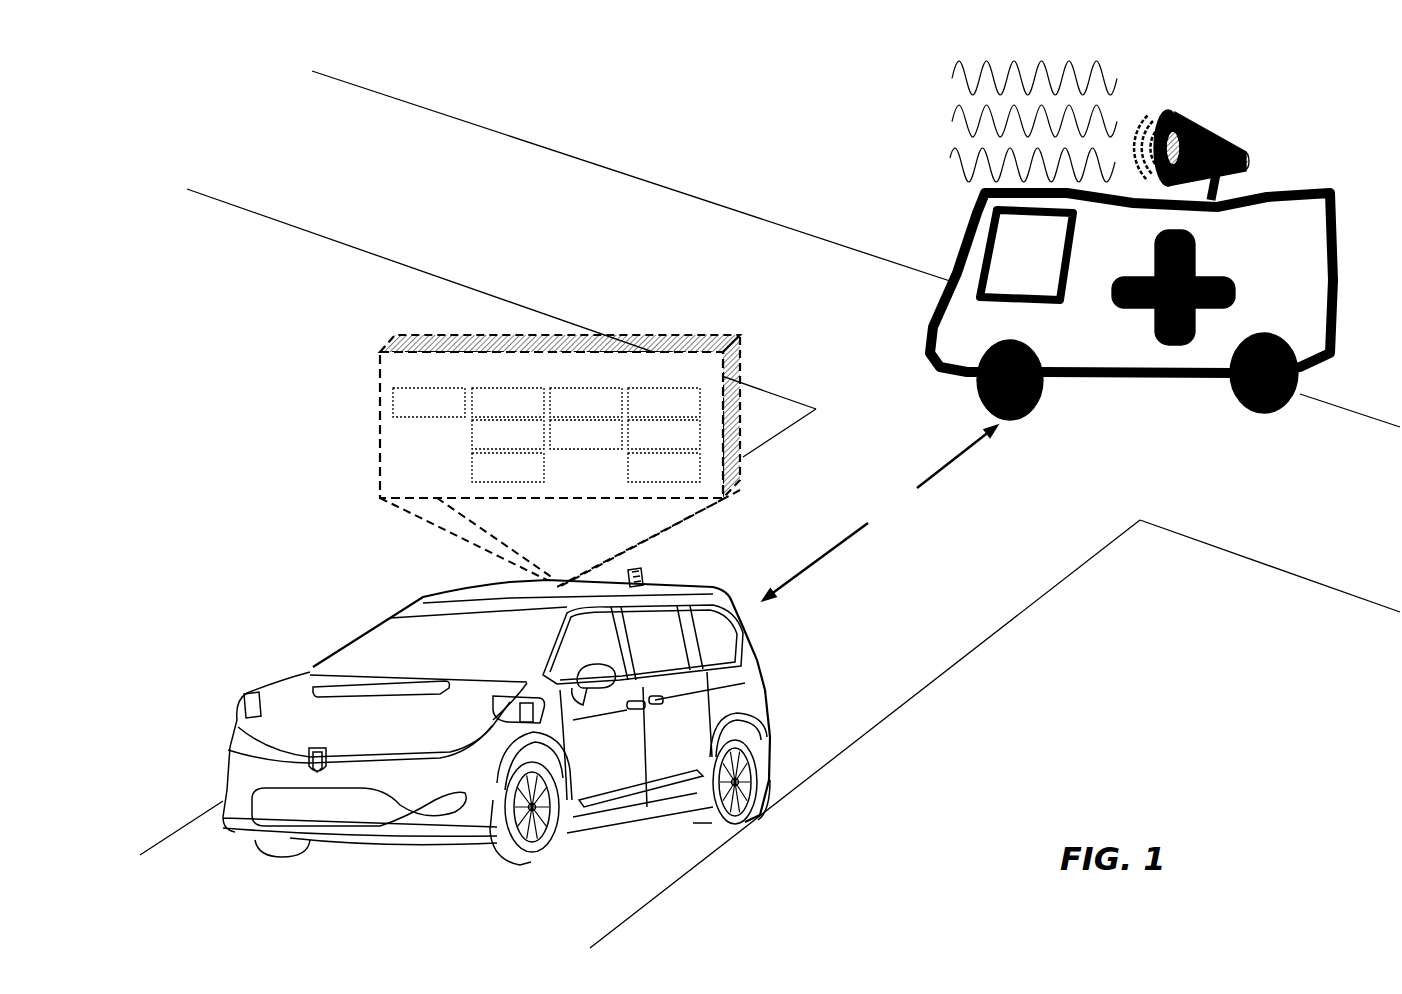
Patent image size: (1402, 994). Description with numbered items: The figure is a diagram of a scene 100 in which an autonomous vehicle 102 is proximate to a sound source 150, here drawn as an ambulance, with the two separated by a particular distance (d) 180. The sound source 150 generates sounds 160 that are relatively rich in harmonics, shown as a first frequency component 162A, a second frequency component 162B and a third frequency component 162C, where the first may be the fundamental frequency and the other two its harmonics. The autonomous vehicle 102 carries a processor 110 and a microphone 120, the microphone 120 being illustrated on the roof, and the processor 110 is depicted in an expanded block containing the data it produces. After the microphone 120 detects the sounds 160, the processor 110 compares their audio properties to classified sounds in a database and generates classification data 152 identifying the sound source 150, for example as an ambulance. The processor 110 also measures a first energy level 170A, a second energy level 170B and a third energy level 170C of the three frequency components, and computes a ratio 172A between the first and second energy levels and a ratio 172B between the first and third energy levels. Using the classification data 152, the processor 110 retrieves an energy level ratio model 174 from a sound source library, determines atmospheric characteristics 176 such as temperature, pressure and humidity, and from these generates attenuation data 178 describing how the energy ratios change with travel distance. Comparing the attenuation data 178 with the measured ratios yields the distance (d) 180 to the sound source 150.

The scene 100 is at (499, 80).
The autonomous vehicle 102 is at (218, 752).
The processor 110 is at (560, 461).
The microphone 120 is at (644, 577).
The sound source 150 is at (958, 250).
The classification data 152 is at (429, 402).
The sounds 160 is at (1160, 97).
The first frequency component 162A is at (940, 78).
The second frequency component 162B is at (937, 119).
The third frequency component 162C is at (935, 166).
The first energy level 170A is at (508, 402).
The second energy level 170B is at (508, 434).
The third energy level 170C is at (508, 467).
The ratio 172A is at (586, 402).
The ratio 172B is at (586, 434).
The energy level ratio model 174 is at (664, 402).
The atmospheric characteristics 176 is at (664, 434).
The attenuation data 178 is at (664, 467).
The distance (d) 180 is at (923, 528).